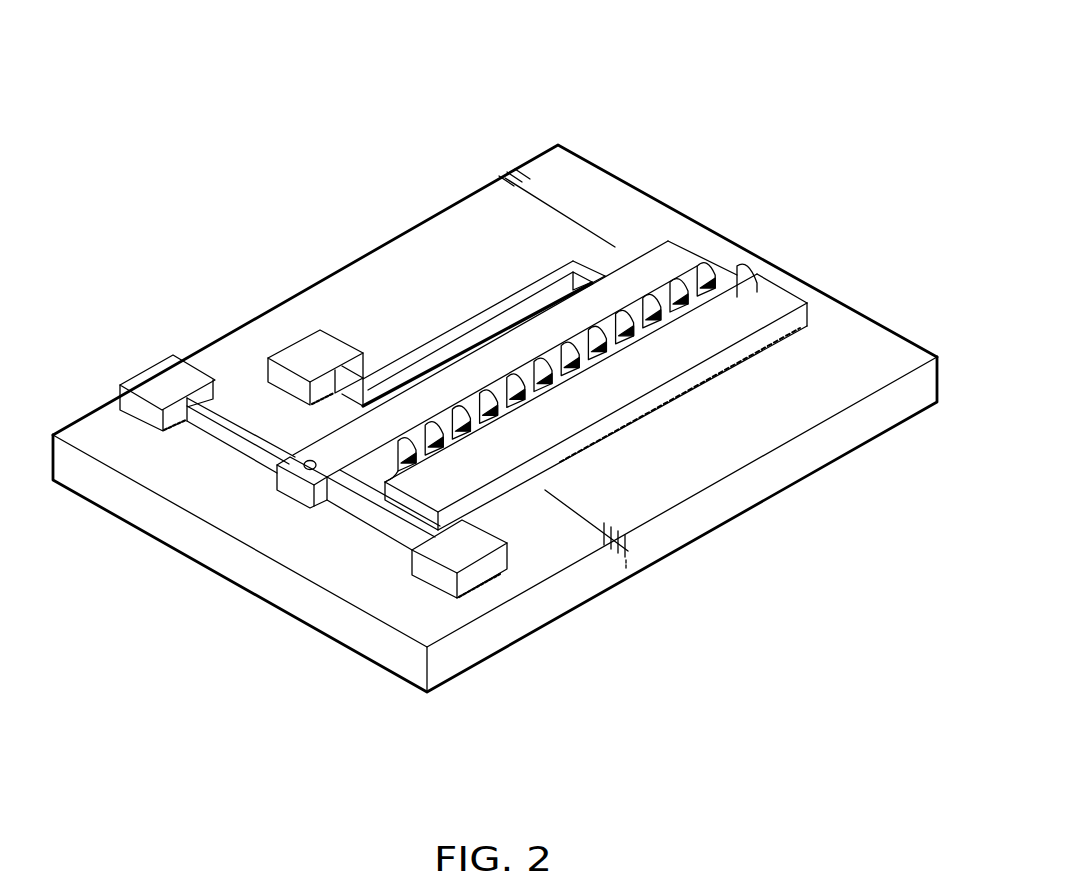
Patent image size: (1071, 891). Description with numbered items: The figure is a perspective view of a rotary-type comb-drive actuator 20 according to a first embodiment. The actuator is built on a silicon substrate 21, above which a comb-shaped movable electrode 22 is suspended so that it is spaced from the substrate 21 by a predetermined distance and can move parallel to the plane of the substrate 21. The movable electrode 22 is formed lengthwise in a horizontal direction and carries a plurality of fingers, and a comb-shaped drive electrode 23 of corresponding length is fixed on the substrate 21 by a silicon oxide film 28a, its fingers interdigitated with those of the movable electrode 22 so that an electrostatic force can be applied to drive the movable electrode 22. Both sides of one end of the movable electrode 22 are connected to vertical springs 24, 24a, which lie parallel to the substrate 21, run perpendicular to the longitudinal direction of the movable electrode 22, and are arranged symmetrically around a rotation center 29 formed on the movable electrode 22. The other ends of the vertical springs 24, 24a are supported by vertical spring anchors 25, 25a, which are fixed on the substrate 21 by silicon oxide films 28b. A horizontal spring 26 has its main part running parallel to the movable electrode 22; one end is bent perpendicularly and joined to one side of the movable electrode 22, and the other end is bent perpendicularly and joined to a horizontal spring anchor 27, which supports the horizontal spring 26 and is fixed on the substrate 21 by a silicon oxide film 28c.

The rotary-type comb-drive actuator 20 is at (464, 110).
The silicon substrate 21 is at (344, 640).
The comb-shaped movable electrode 22 is at (671, 256).
The comb-shaped drive electrode 23 is at (698, 352).
The vertical spring 24 is at (238, 435).
The vertical spring 24a is at (373, 513).
The vertical spring anchor 25 is at (157, 380).
The vertical spring anchor 25a is at (428, 575).
The horizontal spring 26 is at (472, 322).
The horizontal spring anchor 27 is at (330, 343).
The silicon oxide film 28a is at (627, 431).
The silicon oxide films 28b is at (173, 427).
The silicon oxide film 28c is at (323, 400).
The rotation center 29 is at (275, 492).